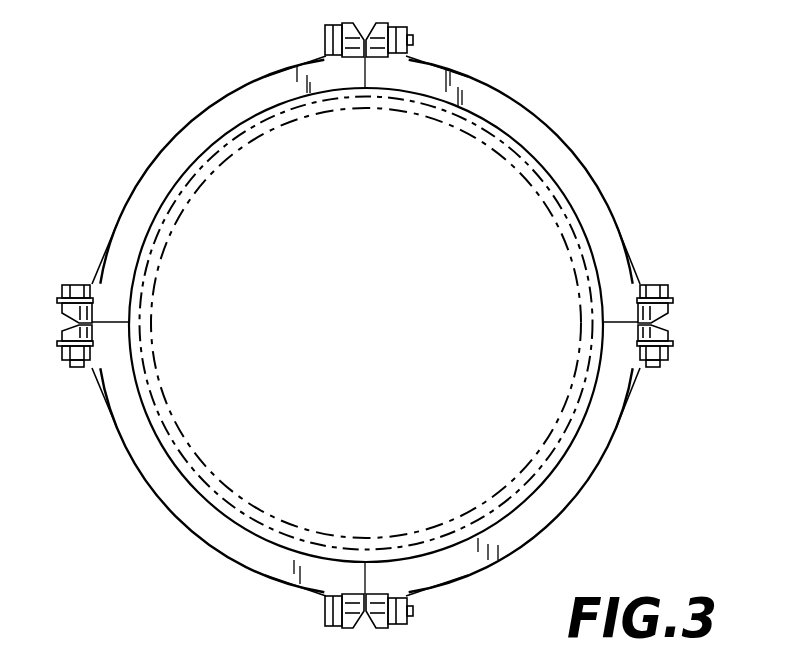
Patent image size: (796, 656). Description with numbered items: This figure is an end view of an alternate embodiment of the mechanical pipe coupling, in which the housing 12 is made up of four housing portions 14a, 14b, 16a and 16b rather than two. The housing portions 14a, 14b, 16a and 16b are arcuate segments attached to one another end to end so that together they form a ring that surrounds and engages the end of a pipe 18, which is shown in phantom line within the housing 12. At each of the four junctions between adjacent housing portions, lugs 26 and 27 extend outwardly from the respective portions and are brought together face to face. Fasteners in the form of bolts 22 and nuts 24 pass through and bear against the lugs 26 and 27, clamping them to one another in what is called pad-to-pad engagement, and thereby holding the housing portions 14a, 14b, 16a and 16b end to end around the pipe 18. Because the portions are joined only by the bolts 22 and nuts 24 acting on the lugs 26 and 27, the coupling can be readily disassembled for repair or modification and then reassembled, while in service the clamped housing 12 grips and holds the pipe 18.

The housing 12 is at (522, 103).
The housing portion 14a is at (583, 193).
The housing portion 14b is at (188, 125).
The housing portion 16a is at (603, 458).
The housing portion 16b is at (143, 485).
The pipe 18 is at (205, 473).
The bolt 22 is at (652, 285).
The nut 24 is at (672, 355).
The lug 26 is at (668, 308).
The lug 27 is at (668, 343).